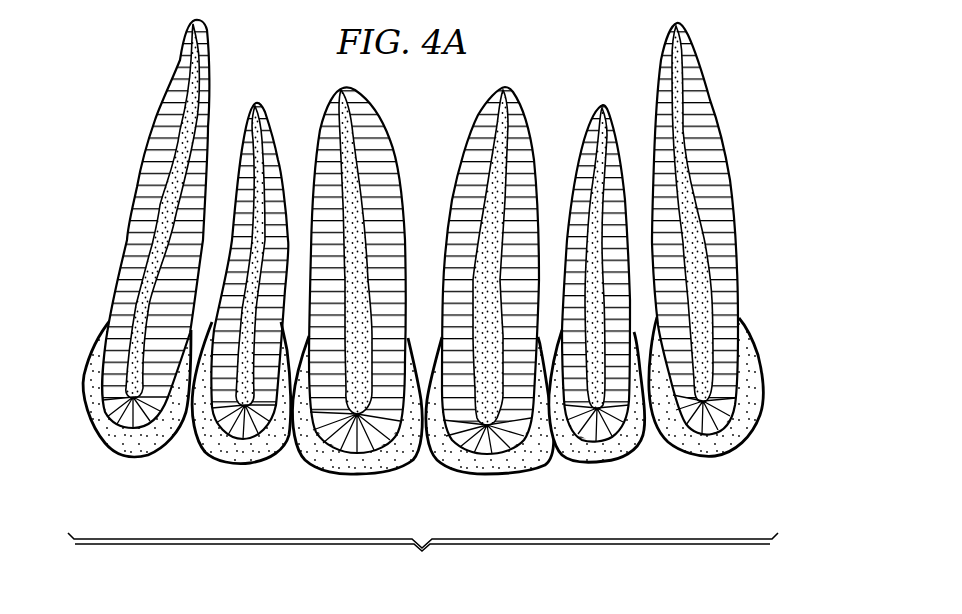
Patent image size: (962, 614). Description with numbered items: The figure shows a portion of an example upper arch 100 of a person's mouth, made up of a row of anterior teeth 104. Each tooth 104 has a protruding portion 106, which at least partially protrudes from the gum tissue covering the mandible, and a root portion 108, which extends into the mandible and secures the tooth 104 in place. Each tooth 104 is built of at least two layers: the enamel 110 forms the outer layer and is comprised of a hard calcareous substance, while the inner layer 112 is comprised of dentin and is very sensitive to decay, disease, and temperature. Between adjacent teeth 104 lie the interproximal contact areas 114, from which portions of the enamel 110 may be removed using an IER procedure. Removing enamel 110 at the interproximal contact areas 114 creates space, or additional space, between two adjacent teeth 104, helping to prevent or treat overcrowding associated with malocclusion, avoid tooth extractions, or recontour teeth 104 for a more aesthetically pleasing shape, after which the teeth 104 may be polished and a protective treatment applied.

The upper arch 100 is at (438, 300).
The anterior teeth 104 is at (423, 300).
The protruding portion 106 is at (770, 383).
The root portion 108 is at (745, 240).
The enamel 110 is at (124, 262).
The inner layer 112 is at (103, 432).
The interproximal contact areas 114 is at (82, 396).